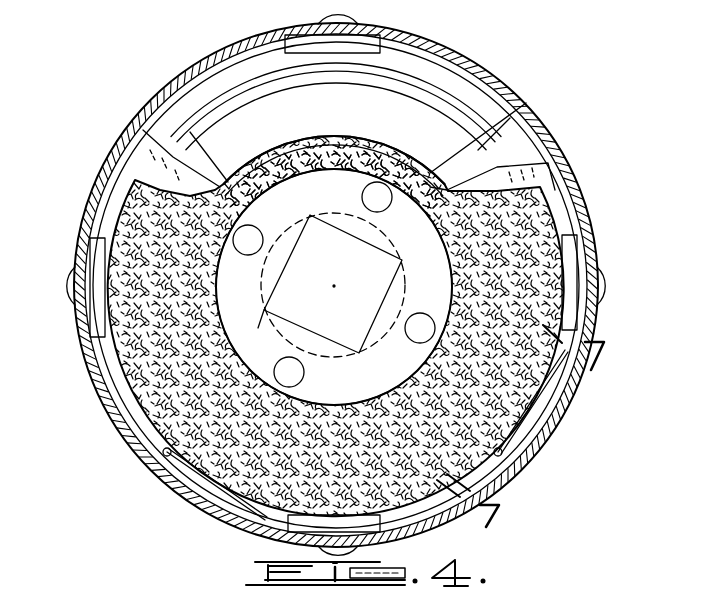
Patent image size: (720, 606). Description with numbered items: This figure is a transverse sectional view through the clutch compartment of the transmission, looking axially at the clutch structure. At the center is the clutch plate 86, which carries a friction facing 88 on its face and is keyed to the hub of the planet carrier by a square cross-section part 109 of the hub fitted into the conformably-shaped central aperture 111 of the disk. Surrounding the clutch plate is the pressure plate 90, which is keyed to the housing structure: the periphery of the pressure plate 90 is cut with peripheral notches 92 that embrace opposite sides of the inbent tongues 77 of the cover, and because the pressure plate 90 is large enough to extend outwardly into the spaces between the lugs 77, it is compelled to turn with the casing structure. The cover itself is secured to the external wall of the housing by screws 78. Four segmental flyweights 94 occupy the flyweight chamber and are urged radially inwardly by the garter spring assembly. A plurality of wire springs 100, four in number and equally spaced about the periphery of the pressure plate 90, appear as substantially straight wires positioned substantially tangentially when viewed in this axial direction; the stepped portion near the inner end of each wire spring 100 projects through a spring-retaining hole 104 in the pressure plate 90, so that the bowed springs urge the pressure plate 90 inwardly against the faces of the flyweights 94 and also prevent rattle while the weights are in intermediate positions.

The inbent tongue 77 is at (383, 35).
The screw 78 is at (70, 289).
The clutch plate 86 is at (335, 367).
The friction facing 88 is at (147, 352).
The pressure plate 90 is at (130, 398).
The peripheral notch 92 is at (92, 236).
The segmental flyweight 94 is at (458, 132).
The wire spring 100 is at (204, 490).
The spring-retaining hole 104 is at (502, 452).
The square cross-section part 109 is at (345, 268).
The central aperture 111 is at (254, 318).